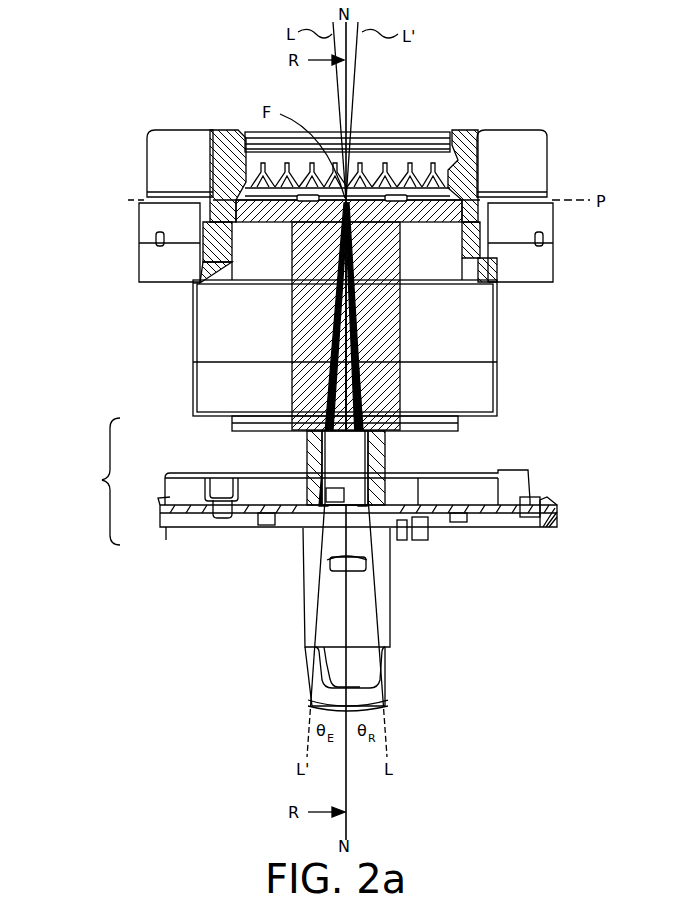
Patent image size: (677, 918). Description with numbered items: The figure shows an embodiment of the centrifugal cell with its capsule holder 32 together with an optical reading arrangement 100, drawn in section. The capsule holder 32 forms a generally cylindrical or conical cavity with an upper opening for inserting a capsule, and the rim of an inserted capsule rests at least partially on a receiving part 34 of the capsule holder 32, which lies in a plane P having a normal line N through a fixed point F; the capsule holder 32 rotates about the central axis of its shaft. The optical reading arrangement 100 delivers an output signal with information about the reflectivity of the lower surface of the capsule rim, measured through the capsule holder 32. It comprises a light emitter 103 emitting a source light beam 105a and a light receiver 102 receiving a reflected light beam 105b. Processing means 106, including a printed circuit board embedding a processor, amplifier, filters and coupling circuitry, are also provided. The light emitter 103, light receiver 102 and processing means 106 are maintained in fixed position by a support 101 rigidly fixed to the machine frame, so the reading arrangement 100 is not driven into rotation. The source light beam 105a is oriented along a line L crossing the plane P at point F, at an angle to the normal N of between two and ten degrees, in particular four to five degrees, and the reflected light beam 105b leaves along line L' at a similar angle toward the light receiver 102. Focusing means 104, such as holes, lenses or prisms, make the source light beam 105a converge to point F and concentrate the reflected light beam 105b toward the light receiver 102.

The capsule holder 32 is at (534, 165).
The receiving part 34 is at (352, 190).
The optical reading arrangement 100 is at (89, 481).
The support 101 is at (158, 520).
The light receiver 102 is at (306, 520).
The light emitter 103 is at (410, 522).
The focusing means 104 is at (330, 408).
The source light beam 105a is at (363, 304).
The reflected light beam 105b is at (320, 301).
The processing means 106 is at (490, 516).